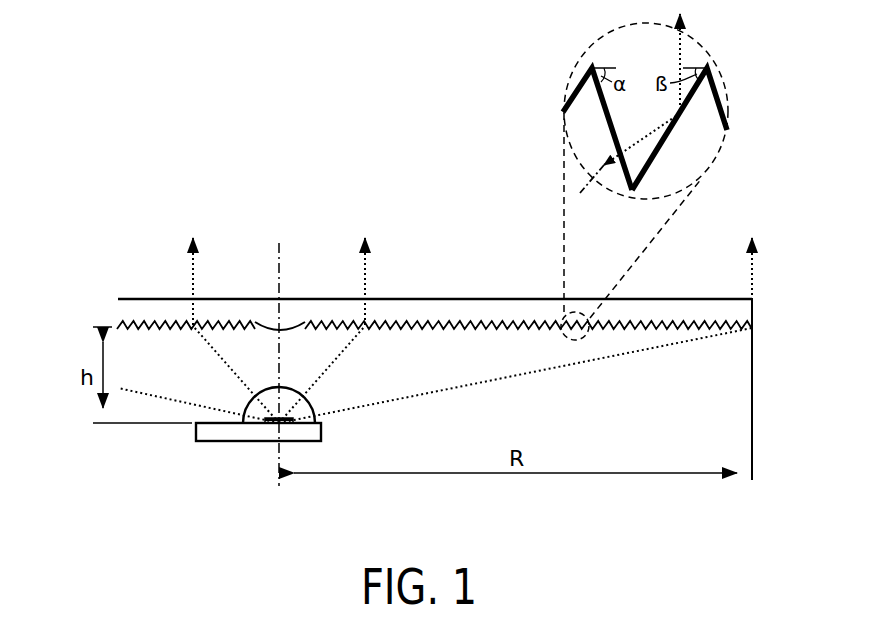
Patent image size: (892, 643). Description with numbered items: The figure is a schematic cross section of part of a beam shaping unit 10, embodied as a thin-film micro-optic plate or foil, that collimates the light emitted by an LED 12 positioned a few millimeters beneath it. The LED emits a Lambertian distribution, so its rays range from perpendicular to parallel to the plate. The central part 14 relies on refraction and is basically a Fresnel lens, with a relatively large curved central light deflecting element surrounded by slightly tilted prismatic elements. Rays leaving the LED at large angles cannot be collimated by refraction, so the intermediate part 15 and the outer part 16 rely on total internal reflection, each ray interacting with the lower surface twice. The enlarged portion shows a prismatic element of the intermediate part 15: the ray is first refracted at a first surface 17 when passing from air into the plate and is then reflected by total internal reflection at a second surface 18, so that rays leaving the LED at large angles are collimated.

The beam shaping unit 10 is at (325, 309).
The LED 12 is at (252, 400).
The central part 14 is at (265, 364).
The intermediate part 15 is at (485, 364).
The outer part 16 is at (737, 364).
The first surface 17 is at (610, 129).
The second surface 18 is at (664, 142).